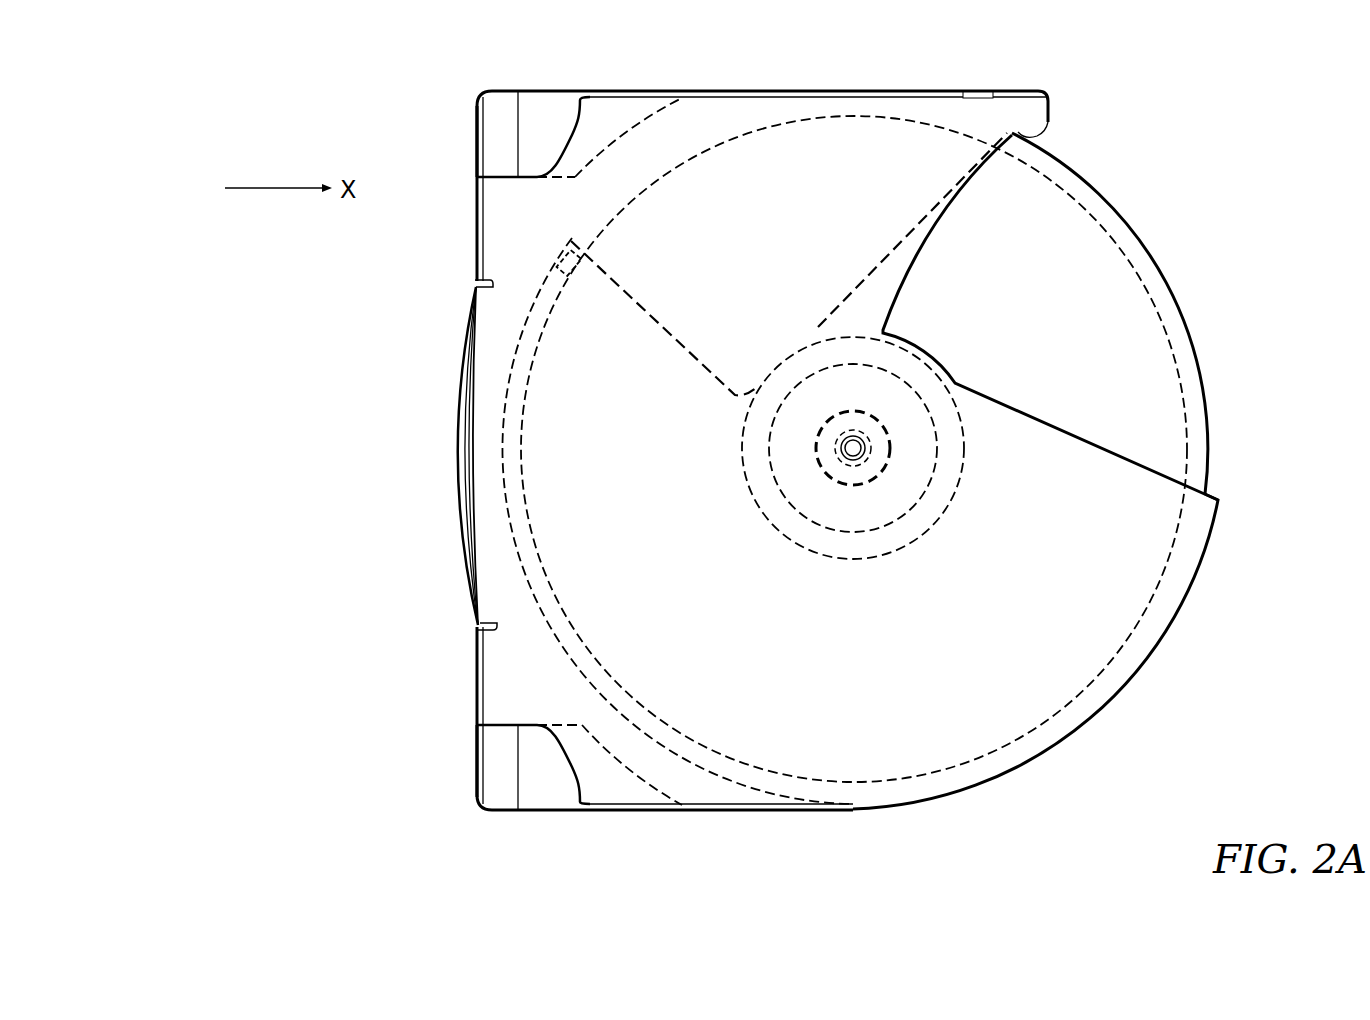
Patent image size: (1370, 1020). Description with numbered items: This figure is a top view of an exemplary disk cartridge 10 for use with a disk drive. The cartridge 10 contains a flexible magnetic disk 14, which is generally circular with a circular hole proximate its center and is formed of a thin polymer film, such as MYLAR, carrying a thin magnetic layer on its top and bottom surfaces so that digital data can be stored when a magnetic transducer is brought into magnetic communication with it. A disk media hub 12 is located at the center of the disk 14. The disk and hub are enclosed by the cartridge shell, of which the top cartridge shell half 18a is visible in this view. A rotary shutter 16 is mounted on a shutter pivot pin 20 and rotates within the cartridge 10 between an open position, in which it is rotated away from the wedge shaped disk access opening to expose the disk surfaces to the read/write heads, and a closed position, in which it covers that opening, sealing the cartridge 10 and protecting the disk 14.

The cartridge 10 is at (254, 781).
The disk media hub 12 is at (793, 437).
The flexible magnetic disk 14 is at (805, 190).
The rotary shutter 16 is at (1128, 225).
The top cartridge shell half 18a is at (1090, 633).
The shutter pivot pin 20 is at (866, 441).